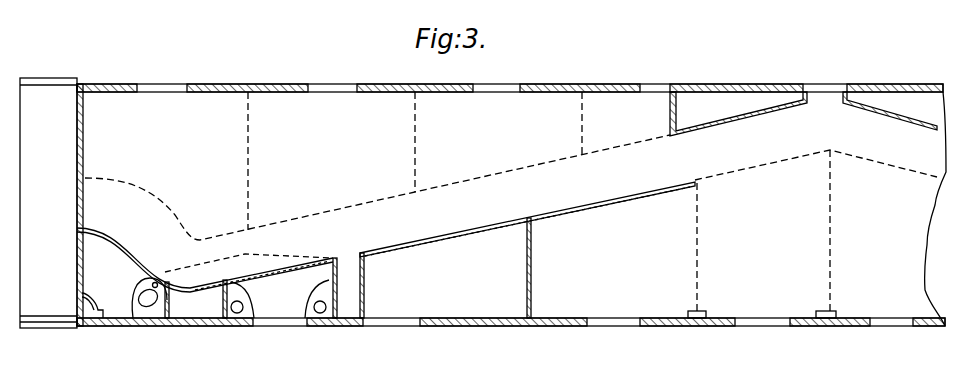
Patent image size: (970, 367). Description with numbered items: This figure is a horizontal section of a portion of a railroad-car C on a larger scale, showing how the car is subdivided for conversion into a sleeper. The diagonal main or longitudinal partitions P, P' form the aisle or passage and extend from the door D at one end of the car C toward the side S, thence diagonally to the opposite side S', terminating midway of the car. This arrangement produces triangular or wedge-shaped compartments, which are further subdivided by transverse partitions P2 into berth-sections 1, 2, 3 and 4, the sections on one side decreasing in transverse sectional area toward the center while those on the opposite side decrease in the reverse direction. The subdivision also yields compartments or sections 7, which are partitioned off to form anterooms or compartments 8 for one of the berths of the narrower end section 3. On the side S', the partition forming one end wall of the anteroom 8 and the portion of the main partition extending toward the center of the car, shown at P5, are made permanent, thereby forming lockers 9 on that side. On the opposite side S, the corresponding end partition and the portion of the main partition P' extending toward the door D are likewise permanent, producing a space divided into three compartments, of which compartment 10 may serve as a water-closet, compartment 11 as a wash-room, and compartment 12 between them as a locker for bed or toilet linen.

The berth-section 1 is at (468, 193).
The berth-section 2 is at (465, 197).
The narrower end section 3 is at (465, 198).
The berth-section 4 is at (869, 254).
The compartment or section 7 is at (253, 287).
The anteroom or compartment 8 is at (482, 214).
The locker 9 is at (803, 114).
The water-closet compartment 10 is at (125, 297).
The wash-room compartment 11 is at (280, 299).
The linen locker compartment 12 is at (207, 299).
The side of the car S is at (510, 78).
The side of the car S' is at (511, 333).
The door D is at (51, 203).
The car C is at (941, 209).
The main or longitudinal partition P is at (511, 187).
The main or longitudinal partition P' is at (574, 222).
The transverse partition P2 is at (550, 205).
The permanent portion of main partition P5 is at (672, 92).